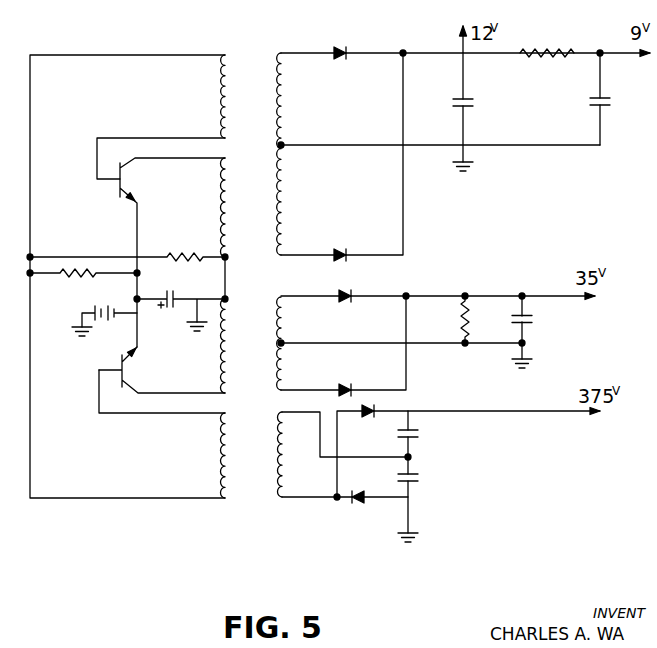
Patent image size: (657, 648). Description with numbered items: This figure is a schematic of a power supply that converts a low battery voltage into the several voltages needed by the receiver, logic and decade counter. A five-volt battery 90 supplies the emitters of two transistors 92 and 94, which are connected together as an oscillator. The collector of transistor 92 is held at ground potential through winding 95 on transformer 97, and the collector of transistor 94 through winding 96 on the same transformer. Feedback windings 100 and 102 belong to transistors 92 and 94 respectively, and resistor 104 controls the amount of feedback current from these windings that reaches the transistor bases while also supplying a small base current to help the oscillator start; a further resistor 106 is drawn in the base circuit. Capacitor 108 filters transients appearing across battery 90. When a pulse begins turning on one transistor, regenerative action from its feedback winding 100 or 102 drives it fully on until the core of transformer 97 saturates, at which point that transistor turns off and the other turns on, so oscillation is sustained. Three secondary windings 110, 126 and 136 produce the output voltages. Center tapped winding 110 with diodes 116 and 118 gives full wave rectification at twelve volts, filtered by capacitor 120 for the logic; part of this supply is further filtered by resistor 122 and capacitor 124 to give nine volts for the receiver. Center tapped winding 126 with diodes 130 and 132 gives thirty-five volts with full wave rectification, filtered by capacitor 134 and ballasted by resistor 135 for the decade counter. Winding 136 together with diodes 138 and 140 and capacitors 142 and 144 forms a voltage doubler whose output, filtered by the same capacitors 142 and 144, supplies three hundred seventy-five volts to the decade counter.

The battery 90 is at (108, 306).
The transistor 92 is at (123, 371).
The transistor 94 is at (122, 180).
The winding 95 is at (220, 345).
The winding 96 is at (220, 204).
The transformer 97 is at (296, 294).
The feedback winding 100 is at (222, 452).
The feedback winding 102 is at (221, 96).
The resistor 104 is at (68, 278).
The resistor 106 is at (194, 252).
The capacitor 108 is at (181, 298).
The center tapped winding 110 is at (284, 150).
The diode 116 is at (343, 47).
The diode 118 is at (343, 249).
The capacitor 120 is at (472, 102).
The resistor 122 is at (535, 47).
The capacitor 124 is at (591, 102).
The center tapped winding 126 is at (283, 345).
The diode 130 is at (349, 290).
The diode 132 is at (347, 384).
The capacitor 134 is at (533, 318).
The resistor 135 is at (490, 329).
The winding 136 is at (285, 458).
The diode 138 is at (371, 417).
The diode 140 is at (359, 491).
The capacitor 142 is at (418, 432).
The capacitor 144 is at (418, 476).